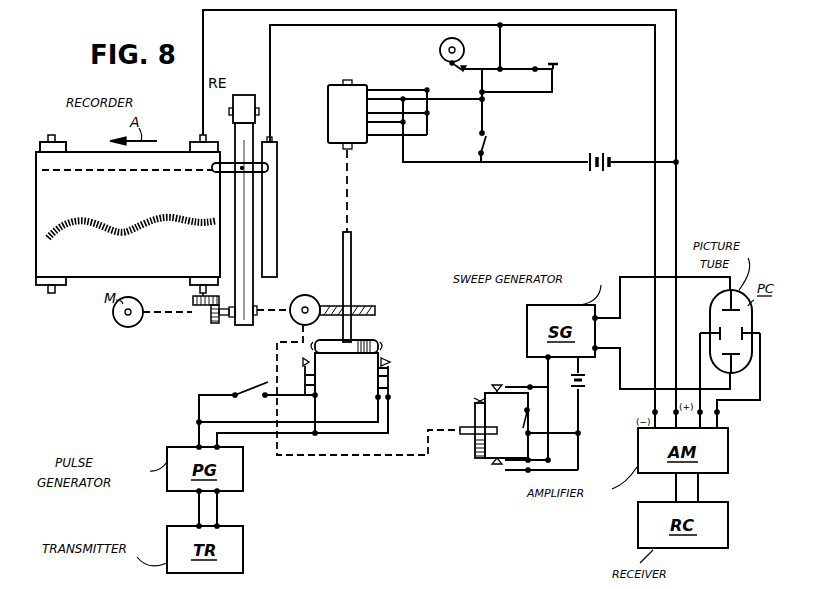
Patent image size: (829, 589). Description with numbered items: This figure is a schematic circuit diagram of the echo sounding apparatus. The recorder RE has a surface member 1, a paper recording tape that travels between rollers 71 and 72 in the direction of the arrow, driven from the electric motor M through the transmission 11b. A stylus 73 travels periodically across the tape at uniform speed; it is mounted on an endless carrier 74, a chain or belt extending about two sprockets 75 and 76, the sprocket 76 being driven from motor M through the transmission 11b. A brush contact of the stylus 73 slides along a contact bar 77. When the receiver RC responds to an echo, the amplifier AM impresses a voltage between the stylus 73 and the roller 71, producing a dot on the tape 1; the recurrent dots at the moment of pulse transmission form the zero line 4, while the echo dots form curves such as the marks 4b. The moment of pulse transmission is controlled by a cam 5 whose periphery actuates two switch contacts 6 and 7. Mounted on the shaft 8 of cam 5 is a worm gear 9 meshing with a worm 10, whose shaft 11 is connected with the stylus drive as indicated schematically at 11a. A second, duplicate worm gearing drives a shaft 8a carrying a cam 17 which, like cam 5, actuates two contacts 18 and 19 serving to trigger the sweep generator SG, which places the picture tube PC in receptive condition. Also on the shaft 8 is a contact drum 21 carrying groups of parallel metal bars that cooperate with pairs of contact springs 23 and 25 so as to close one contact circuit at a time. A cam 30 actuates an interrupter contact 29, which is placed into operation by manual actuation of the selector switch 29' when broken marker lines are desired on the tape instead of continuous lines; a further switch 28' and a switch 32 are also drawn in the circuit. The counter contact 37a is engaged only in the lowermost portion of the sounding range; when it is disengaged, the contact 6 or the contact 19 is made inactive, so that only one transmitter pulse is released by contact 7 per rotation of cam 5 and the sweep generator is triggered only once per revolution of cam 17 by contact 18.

The surface member 1 is at (86, 155).
The zero line 4 is at (130, 173).
The recording marks 4b is at (124, 238).
The cam 5 is at (337, 356).
The switch contact 6 is at (305, 396).
The switch contact 7 is at (390, 372).
The shaft 8 is at (350, 205).
The shaft 8a is at (462, 426).
The worm gear 9 is at (372, 304).
The worm 10 is at (307, 306).
The worm shaft 11 is at (309, 310).
The stylus drive connection 11a is at (358, 382).
The transmission 11b is at (174, 312).
The cam 17 is at (475, 445).
The contact 18 is at (502, 468).
The contact 19 is at (506, 377).
The contact drum 21 is at (328, 97).
The contact springs 23 is at (384, 96).
The contact springs 25 is at (393, 136).
The switch 28' is at (500, 146).
The interrupter contact 29 is at (481, 78).
The selector switch 29' is at (553, 54).
The cam 30 is at (440, 48).
The switch 32 is at (248, 378).
The counter contact 37a is at (524, 442).
The roller 71 is at (190, 148).
The roller 72 is at (42, 141).
The stylus 73 is at (257, 167).
The endless carrier 74 is at (247, 205).
The sprocket 75 is at (255, 102).
The sprocket 76 is at (256, 302).
The contact bar 77 is at (277, 156).